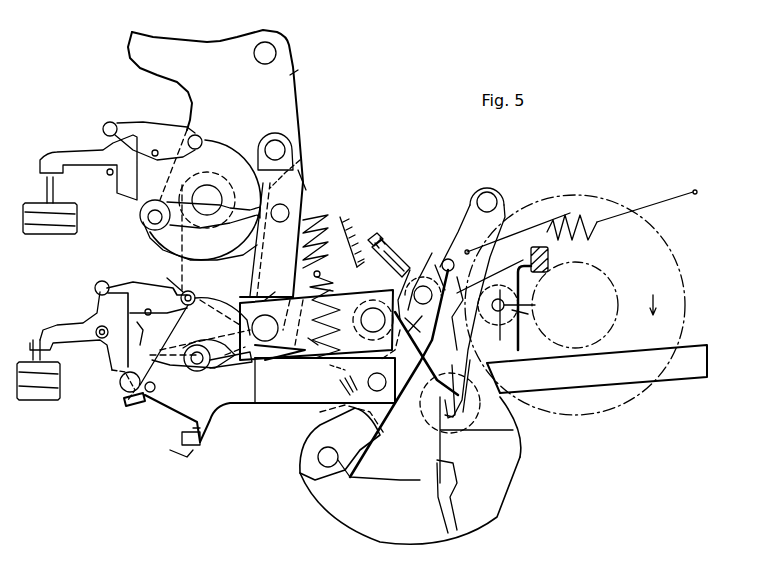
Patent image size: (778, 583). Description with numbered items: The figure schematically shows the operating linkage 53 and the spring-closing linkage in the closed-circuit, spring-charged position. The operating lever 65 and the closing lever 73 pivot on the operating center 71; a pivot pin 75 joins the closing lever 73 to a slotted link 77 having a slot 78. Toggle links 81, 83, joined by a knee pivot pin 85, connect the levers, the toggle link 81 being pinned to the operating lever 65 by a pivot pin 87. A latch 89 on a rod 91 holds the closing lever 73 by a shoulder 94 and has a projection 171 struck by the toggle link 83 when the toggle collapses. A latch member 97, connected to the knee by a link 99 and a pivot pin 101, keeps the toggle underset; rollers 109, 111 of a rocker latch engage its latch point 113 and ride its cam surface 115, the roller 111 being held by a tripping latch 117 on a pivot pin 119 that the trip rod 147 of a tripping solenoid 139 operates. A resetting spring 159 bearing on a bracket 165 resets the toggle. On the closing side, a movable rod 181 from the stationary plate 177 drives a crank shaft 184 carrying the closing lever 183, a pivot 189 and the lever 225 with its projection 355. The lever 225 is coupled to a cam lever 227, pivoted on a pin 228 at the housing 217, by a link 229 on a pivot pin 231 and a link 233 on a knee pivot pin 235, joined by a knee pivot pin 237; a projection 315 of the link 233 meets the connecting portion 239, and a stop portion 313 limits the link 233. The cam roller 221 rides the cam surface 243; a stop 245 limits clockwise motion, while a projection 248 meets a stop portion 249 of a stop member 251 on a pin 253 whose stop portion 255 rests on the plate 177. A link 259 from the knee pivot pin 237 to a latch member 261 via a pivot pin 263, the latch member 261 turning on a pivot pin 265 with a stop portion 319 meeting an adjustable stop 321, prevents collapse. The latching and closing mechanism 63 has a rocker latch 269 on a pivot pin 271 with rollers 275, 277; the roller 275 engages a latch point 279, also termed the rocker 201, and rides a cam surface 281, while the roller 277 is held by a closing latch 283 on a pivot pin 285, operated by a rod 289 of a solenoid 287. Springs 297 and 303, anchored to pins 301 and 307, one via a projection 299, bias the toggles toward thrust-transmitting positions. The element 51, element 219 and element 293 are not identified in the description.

The pivot hole 51 is at (276, 53).
The operating linkage 53 is at (309, 99).
The latching and closing mechanism 63 is at (111, 274).
The operating lever 65 is at (297, 72).
The operating center 71 is at (222, 190).
The closing lever 73 is at (178, 259).
The pivot pin 75 is at (316, 323).
The slotted link 77 is at (388, 301).
The slot 78 is at (419, 353).
The toggle link 81 is at (300, 164).
The toggle link 83 is at (307, 185).
The knee pivot pin 85 is at (289, 213).
The pivot pin 87 is at (275, 140).
The latch 89 is at (280, 356).
The rod 91 is at (120, 386).
The shoulder 94 is at (201, 356).
The latch member 97 is at (173, 172).
The link 99 is at (150, 241).
The pivot pin 101 is at (140, 227).
The roller 109 is at (198, 133).
The roller 111 is at (106, 124).
The latch point 113 is at (203, 141).
The cam surface 115 is at (237, 150).
The tripping latch 117 is at (58, 153).
The pivot pin 119 is at (107, 173).
The tripping solenoid 139 is at (36, 259).
The trip rod 147 is at (46, 190).
The resetting spring 159 is at (330, 219).
The bracket 165 is at (357, 234).
The projection 171 is at (320, 338).
The stationary plate 177 is at (549, 256).
The movable rod 181 is at (675, 381).
The closing lever 183 is at (323, 367).
The crank shaft 184 is at (498, 519).
The pivot 189 is at (465, 447).
The rocker 201 is at (368, 296).
The housing 217 is at (392, 237).
The circle 219 is at (614, 283).
The cam roller 221 is at (541, 316).
The lever 225 is at (345, 528).
The cam lever 227 is at (462, 216).
The pin 228 is at (487, 192).
The link 229 is at (300, 463).
The pivot pin 231 is at (350, 479).
The link 233 is at (421, 292).
The knee pivot pin 235 is at (428, 254).
The knee pivot pin 237 is at (367, 384).
The connecting portion 239 is at (320, 419).
The cam surface 243 is at (500, 237).
The adjustable stop 245 is at (368, 243).
The projection 248 is at (445, 259).
The stop portion 249 is at (475, 251).
The stop member 251 is at (517, 354).
The pivot pin 253 is at (524, 305).
The stop portion 255 is at (518, 261).
The link 259 is at (250, 406).
The latch member 261 is at (173, 408).
The pivot pin 263 is at (156, 389).
The pivot pin 265 is at (193, 347).
The rocker latch 269 is at (157, 325).
The pivot pin 271 is at (147, 338).
The roller 275 is at (161, 277).
The roller 277 is at (98, 284).
The latch point 279 is at (200, 296).
The cam surface 281 is at (228, 311).
The closing latch 283 is at (55, 323).
The pivot pin 285 is at (98, 339).
The solenoid 287 is at (36, 425).
The rod 289 is at (45, 361).
The arm end 293 is at (480, 373).
The spring 297 is at (334, 276).
The projection 299 is at (342, 396).
The pin 301 is at (278, 286).
The spring 303 is at (577, 221).
The pin 307 is at (693, 191).
The stop portion 313 is at (421, 318).
The projection 315 is at (386, 436).
The stop portion 319 is at (203, 441).
The adjustable stop 321 is at (167, 448).
The projection 355 is at (457, 478).